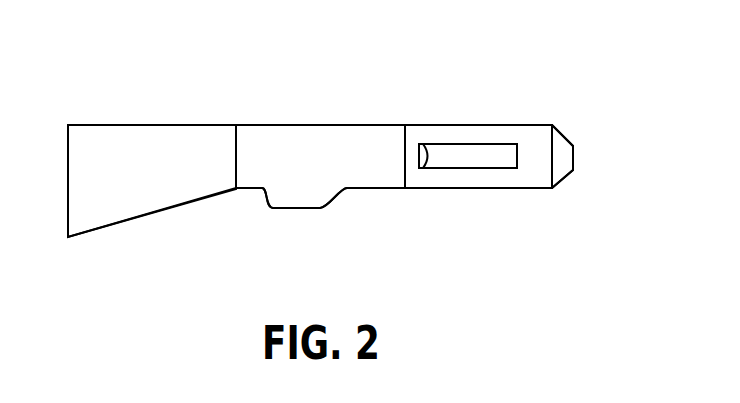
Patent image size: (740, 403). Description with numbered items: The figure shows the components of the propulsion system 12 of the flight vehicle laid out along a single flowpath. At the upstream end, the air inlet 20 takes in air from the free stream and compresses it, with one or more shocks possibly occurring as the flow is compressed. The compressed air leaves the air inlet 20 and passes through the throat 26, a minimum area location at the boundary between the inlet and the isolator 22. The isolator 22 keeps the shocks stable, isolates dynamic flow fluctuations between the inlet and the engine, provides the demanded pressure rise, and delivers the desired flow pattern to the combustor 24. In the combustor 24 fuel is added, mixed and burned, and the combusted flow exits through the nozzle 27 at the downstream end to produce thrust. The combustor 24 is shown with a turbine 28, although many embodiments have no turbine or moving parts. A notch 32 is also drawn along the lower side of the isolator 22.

The propulsion system 12 is at (101, 101).
The air inlet 20 is at (137, 125).
The isolator 22 is at (376, 158).
The combustor 24 is at (532, 125).
The throat 26 is at (236, 156).
The nozzle 27 is at (562, 155).
The turbine 28 is at (467, 158).
The notch 32 is at (296, 187).